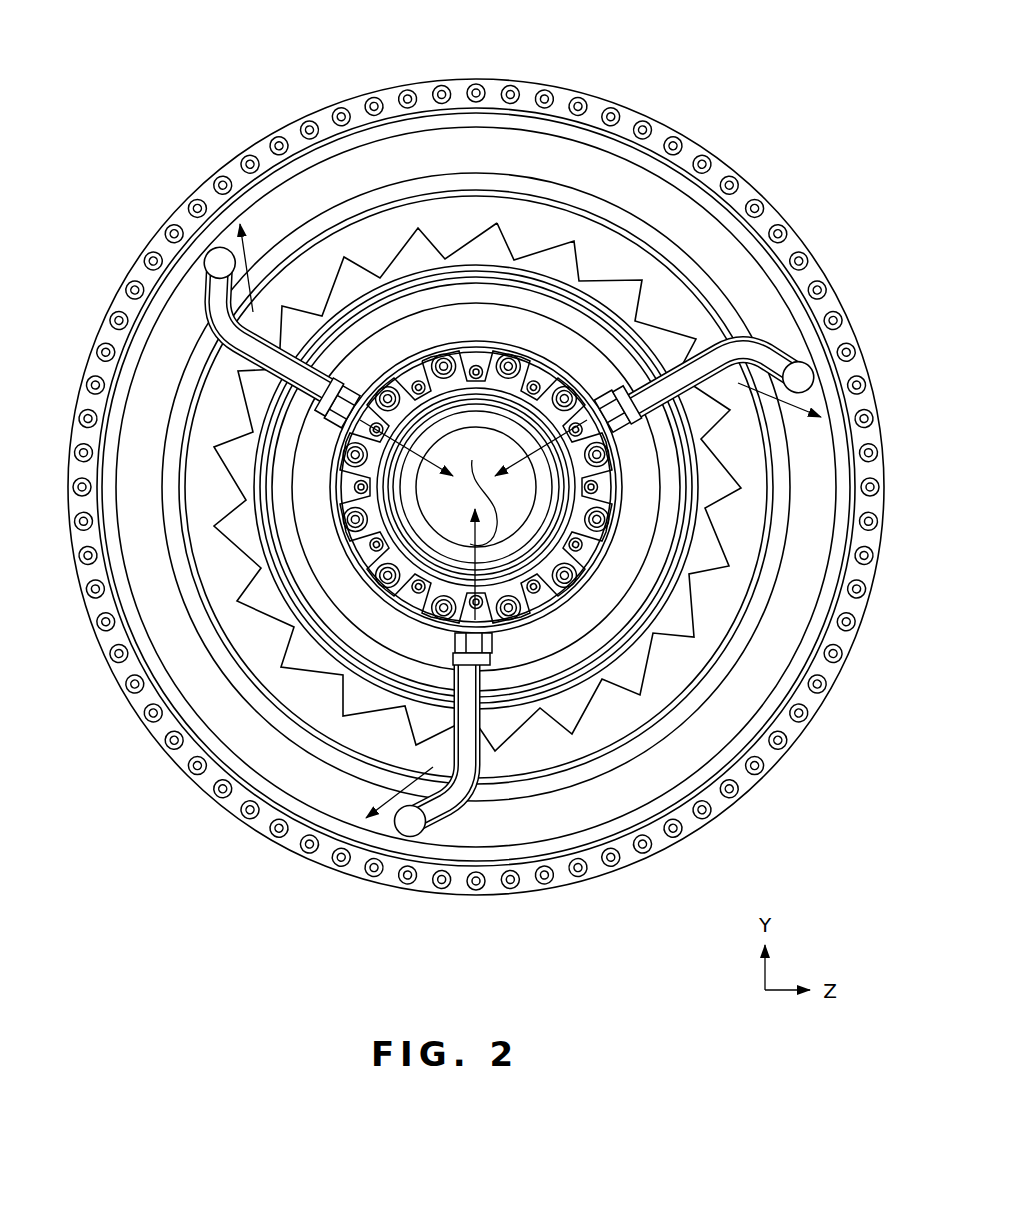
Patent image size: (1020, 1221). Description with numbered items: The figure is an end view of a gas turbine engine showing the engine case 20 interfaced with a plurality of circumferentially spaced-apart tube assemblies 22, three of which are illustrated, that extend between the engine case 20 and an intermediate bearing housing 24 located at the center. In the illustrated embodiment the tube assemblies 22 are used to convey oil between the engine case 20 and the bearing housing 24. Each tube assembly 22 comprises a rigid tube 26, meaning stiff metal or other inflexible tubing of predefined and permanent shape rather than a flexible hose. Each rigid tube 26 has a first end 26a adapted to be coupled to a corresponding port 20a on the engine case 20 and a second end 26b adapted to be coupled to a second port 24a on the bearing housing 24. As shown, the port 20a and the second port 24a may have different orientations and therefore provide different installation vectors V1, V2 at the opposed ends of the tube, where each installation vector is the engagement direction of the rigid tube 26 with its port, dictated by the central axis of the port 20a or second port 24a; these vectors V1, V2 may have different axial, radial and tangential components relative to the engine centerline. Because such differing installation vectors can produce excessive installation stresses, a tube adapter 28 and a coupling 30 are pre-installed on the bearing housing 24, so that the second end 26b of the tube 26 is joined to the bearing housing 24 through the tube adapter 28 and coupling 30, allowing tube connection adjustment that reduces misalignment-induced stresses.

The engine case 20 is at (335, 178).
The port 20a is at (220, 233).
The tube assembly 22 is at (198, 308).
The bearing housing 24 is at (625, 572).
The second port 24a is at (343, 430).
The rigid tube 26 is at (240, 343).
The first end 26a is at (207, 252).
The second end 26b is at (312, 270).
The tube adapter 28 is at (440, 645).
The coupling 30 is at (368, 802).
The installation vector V1 is at (251, 297).
The installation vector V2 is at (437, 456).